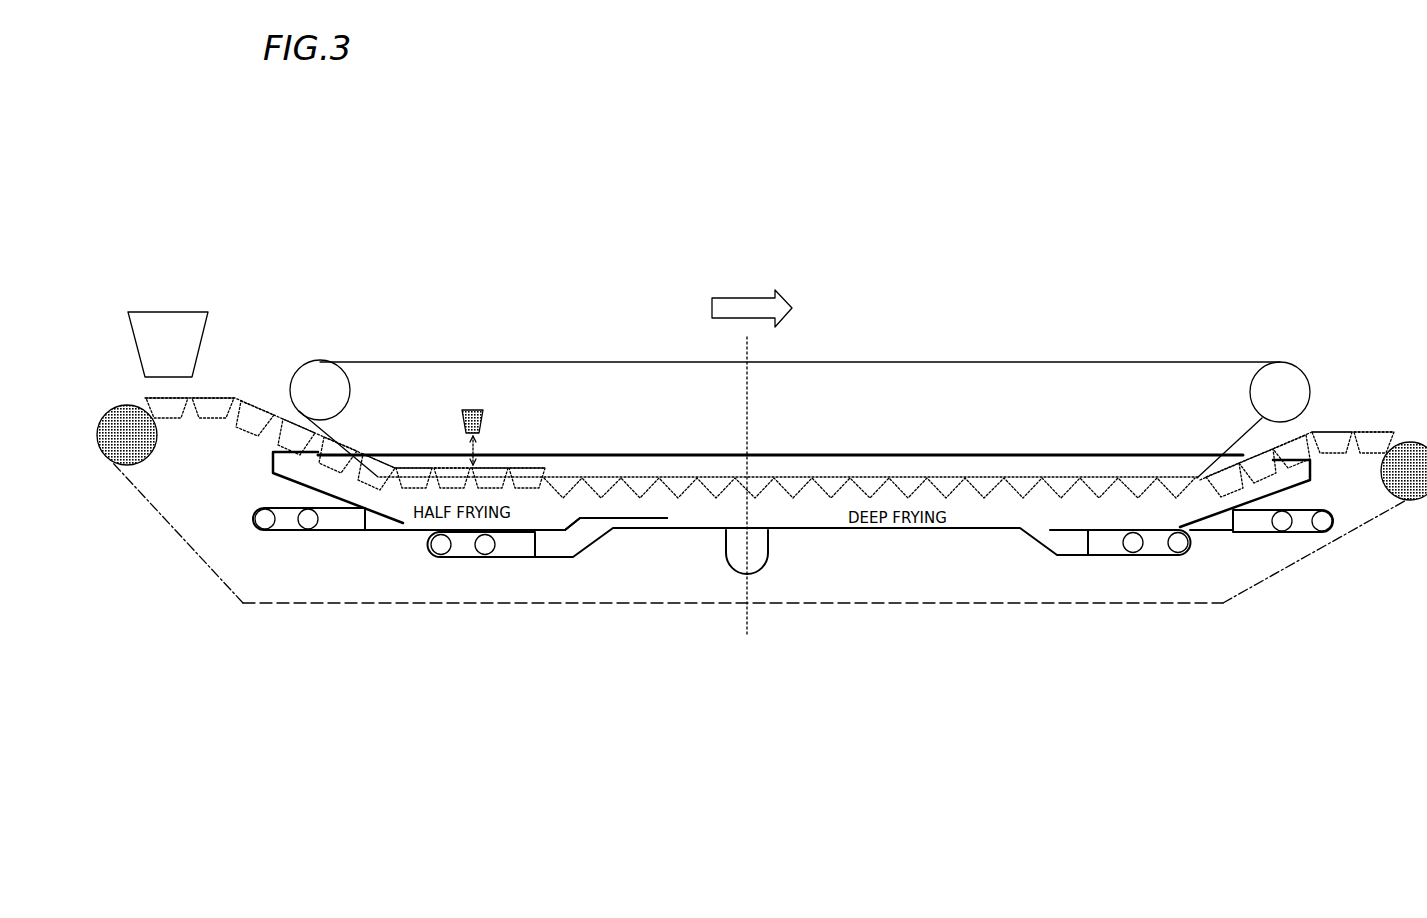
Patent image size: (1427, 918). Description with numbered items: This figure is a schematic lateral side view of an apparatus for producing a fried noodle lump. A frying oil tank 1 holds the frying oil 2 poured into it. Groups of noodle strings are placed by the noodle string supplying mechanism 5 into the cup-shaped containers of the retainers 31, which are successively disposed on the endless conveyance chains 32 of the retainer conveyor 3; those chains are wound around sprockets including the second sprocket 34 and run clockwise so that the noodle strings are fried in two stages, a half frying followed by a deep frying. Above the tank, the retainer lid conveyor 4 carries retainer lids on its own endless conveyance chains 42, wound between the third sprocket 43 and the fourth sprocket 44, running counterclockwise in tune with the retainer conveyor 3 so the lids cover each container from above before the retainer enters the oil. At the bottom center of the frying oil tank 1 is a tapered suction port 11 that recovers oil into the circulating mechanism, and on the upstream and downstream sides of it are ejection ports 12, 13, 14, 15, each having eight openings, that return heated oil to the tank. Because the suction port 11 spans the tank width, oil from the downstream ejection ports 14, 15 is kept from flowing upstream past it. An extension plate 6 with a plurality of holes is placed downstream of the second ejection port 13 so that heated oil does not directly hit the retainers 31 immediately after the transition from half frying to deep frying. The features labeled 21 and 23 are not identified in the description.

The frying oil tank 1 is at (790, 461).
The frying oil 2 is at (345, 444).
The retainer conveyor 3 is at (1313, 500).
The retainer lid conveyor 4 is at (805, 401).
The noodle string supplying mechanism 5 is at (183, 333).
The extension plate 6 is at (667, 518).
The suction port 11 is at (728, 564).
The ejection port 12 is at (352, 533).
The second ejection port 13 is at (507, 557).
The ejection port 14 is at (1108, 557).
The ejection port 15 is at (1258, 533).
The fryer tank 21 is at (791, 504).
The inlet conveyor pulley 23 is at (148, 462).
The retainer 31 is at (1328, 428).
The conveyance chain 32 is at (1300, 560).
The second sprocket 34 is at (1378, 458).
The conveyance chain 42 is at (1090, 366).
The third sprocket 43 is at (291, 388).
The fourth sprocket 44 is at (1303, 378).